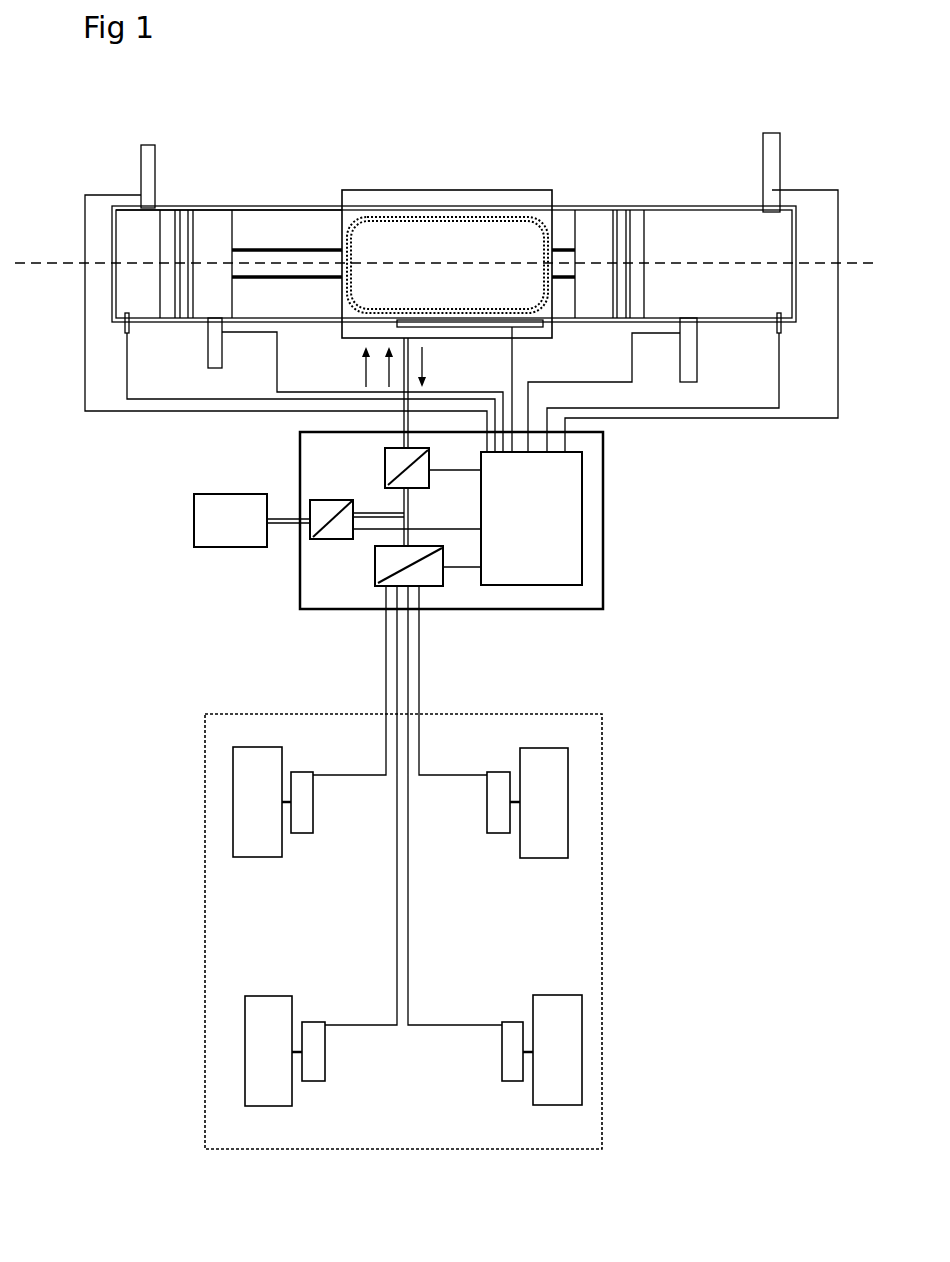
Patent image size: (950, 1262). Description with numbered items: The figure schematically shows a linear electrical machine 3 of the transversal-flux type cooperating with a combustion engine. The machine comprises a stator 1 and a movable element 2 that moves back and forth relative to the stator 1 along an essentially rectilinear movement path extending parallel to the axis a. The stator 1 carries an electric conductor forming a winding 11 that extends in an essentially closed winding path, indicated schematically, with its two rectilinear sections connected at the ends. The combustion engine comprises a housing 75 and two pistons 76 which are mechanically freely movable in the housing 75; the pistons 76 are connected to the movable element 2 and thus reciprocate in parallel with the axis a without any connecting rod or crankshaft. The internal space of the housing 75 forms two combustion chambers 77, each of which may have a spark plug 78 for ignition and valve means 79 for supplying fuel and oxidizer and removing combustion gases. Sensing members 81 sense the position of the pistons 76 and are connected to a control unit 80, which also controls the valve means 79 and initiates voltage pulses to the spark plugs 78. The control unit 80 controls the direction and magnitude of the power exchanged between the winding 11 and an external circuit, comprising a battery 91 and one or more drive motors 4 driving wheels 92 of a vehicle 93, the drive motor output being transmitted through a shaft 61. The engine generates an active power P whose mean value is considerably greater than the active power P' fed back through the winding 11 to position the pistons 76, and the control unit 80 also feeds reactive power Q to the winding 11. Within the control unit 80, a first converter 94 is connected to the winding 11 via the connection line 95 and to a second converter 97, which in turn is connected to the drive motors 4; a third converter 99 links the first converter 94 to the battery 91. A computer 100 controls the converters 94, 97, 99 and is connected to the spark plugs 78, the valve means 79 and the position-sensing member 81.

The stator 1 is at (401, 190).
The movable element 2 is at (317, 248).
The linear electrical machine 3 is at (517, 178).
The drive motor 4 is at (300, 820).
The winding 11 is at (430, 223).
The shaft 61 is at (290, 802).
The housing 75 is at (257, 202).
The piston 76 is at (215, 233).
The combustion chamber 77 is at (730, 263).
The spark plug 78 is at (126, 313).
The valve means 79 is at (212, 345).
The control unit 80 is at (606, 469).
The sensing member 81 is at (463, 325).
The battery 91 is at (232, 527).
The wheel 92 is at (262, 767).
The vehicle 93 is at (587, 716).
The first converter 94 is at (397, 457).
The connection line 95 is at (403, 406).
The second converter 97 is at (388, 565).
The third converter 99 is at (343, 528).
The computer 100 is at (553, 544).
The axis a is at (43, 262).
The reactive power Q is at (363, 365).
The active power P is at (583, 411).
The fed-back active power P' is at (209, 411).